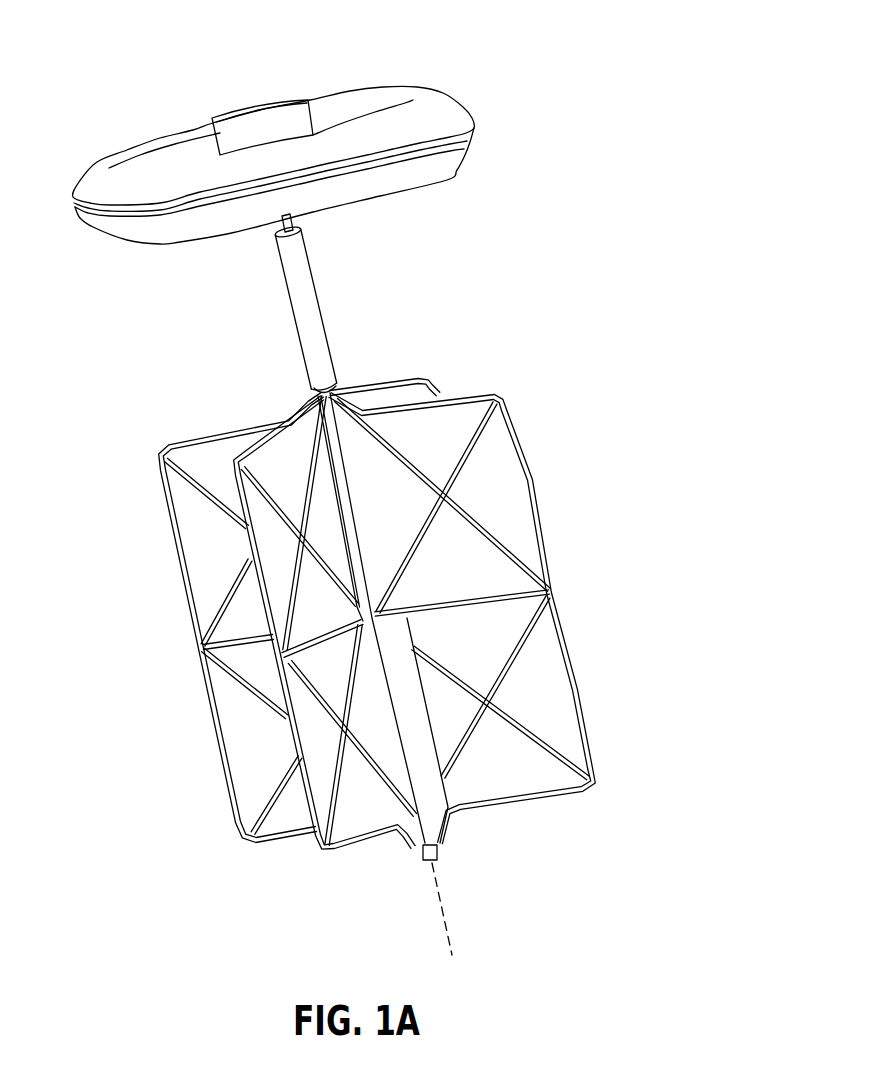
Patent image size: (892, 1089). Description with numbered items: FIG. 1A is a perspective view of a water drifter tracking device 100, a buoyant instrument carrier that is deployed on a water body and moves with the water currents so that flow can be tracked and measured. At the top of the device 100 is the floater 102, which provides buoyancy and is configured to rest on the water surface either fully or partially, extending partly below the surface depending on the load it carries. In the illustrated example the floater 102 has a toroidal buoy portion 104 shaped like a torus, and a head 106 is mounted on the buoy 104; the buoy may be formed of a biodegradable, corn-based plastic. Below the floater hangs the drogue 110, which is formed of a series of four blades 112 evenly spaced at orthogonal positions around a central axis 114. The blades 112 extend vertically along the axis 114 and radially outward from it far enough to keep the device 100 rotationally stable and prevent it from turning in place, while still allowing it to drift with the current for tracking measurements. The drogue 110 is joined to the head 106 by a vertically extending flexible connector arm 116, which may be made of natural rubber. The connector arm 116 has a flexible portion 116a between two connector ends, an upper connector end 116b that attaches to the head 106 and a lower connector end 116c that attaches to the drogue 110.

The water drifter tracking device 100 is at (604, 176).
The floater 102 is at (372, 73).
The toroidal buoy portion 104 is at (450, 112).
The head 106 is at (252, 108).
The drogue 110 is at (592, 617).
The blades 112 is at (407, 383).
The central axis 114 is at (445, 920).
The flexible connector arm 116 is at (366, 283).
The flexible portion 116a is at (302, 292).
The connector end 116b is at (278, 229).
The connector end 116c is at (318, 392).